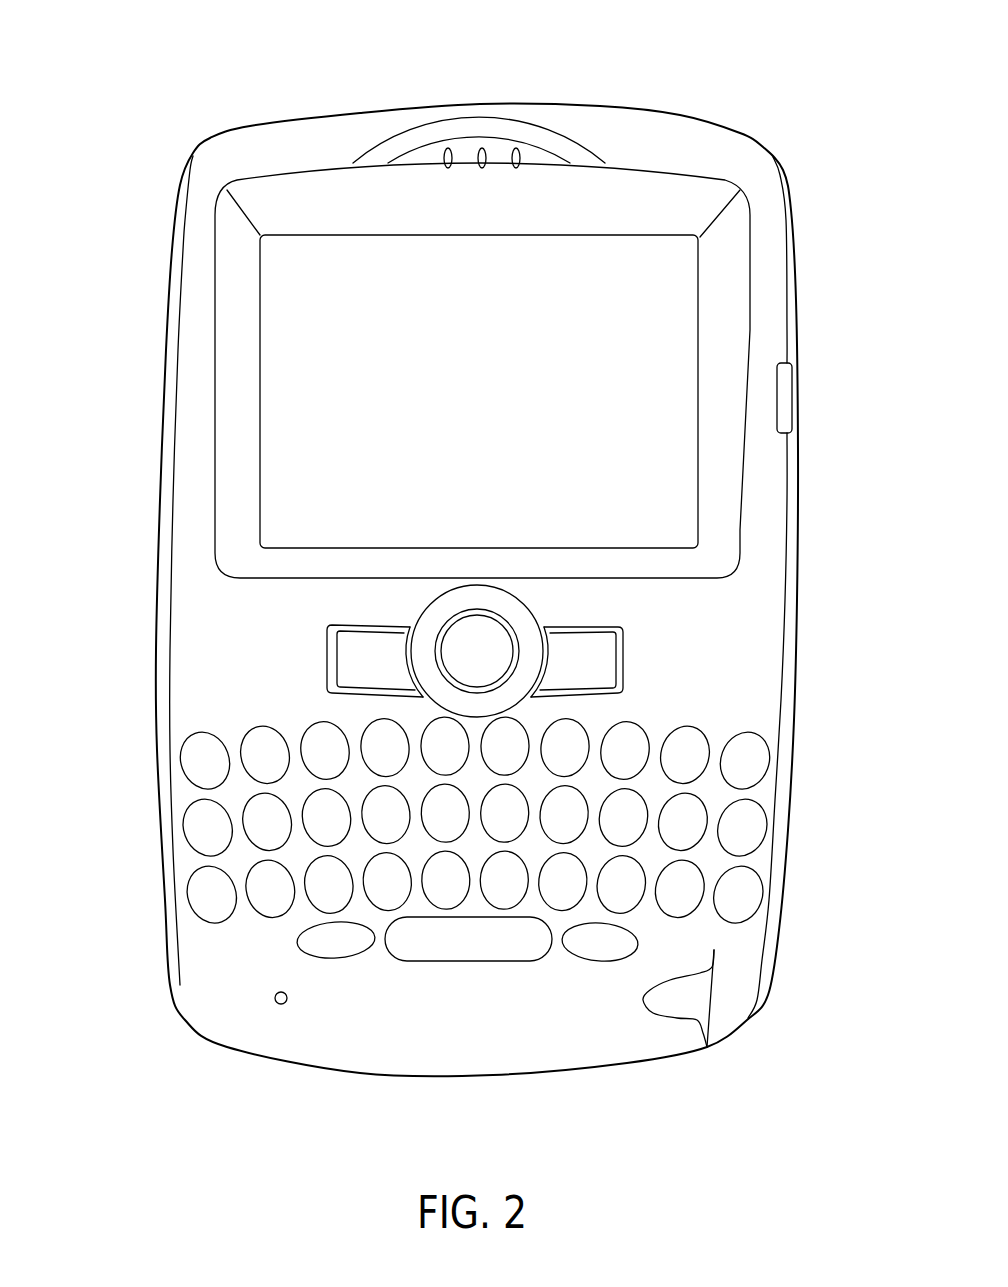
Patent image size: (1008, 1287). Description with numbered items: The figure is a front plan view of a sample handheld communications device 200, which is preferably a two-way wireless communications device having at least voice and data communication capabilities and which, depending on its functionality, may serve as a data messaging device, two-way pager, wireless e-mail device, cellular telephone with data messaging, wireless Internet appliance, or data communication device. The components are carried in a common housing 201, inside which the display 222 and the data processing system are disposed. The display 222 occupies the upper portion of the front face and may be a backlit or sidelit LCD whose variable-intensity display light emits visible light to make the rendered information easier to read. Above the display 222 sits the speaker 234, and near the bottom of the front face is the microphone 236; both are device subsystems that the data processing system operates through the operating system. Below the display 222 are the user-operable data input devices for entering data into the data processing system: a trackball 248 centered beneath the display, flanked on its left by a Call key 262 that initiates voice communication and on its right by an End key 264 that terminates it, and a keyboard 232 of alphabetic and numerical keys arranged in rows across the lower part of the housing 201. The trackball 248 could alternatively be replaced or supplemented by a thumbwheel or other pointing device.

The handheld communications device 200 is at (202, 61).
The housing 201 is at (318, 114).
The display 222 is at (698, 505).
The keyboard 232 is at (828, 735).
The speaker 234 is at (482, 168).
The microphone 236 is at (282, 1006).
The trackball 248 is at (488, 642).
The Call key 262 is at (340, 662).
The End key 264 is at (603, 672).